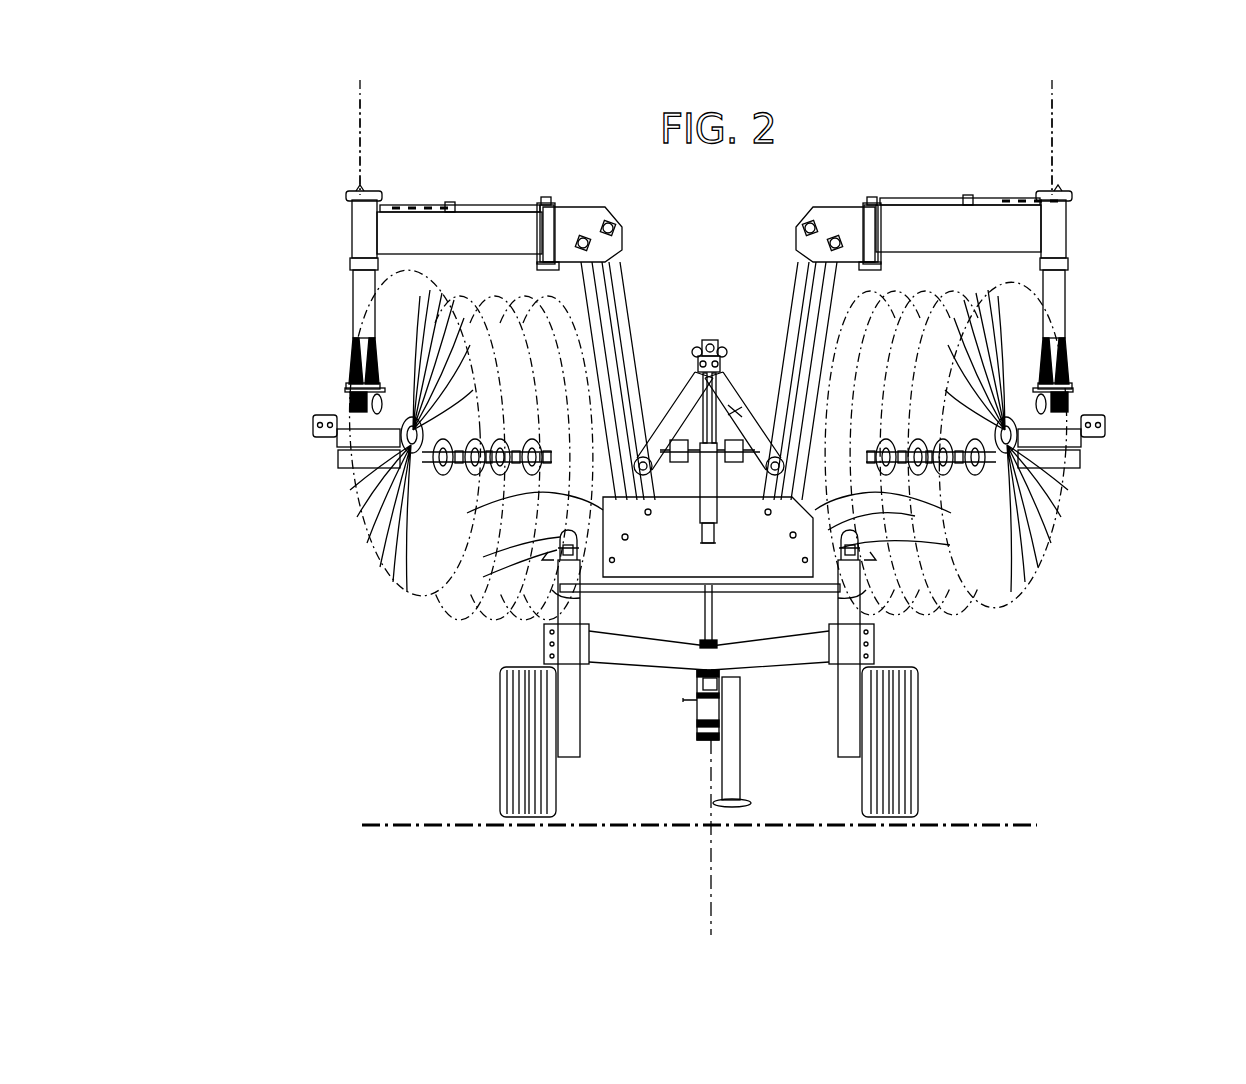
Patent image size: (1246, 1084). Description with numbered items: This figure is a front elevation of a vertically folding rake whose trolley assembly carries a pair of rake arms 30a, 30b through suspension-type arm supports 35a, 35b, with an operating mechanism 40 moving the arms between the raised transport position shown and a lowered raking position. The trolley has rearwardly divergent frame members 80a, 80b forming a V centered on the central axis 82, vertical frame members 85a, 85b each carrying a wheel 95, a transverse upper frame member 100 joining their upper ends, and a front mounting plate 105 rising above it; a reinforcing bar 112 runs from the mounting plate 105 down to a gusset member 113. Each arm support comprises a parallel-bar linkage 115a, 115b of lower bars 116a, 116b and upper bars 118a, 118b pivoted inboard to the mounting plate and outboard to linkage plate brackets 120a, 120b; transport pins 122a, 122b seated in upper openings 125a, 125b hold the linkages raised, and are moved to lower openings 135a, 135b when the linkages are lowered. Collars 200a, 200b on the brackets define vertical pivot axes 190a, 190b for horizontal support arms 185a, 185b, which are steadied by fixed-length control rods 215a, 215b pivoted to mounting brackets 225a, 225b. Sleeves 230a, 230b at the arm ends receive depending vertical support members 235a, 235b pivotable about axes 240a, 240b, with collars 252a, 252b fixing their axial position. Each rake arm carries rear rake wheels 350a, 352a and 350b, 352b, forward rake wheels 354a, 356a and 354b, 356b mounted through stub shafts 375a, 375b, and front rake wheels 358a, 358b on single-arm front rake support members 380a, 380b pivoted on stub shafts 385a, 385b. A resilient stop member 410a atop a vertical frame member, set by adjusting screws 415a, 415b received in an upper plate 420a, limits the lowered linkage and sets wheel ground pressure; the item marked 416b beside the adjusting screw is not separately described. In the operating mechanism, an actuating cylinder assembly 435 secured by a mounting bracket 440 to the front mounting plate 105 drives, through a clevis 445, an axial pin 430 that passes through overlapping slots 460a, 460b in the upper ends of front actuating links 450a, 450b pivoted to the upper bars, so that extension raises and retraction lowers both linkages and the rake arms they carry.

The rake arm 30a is at (1082, 440).
The rake arm 30b is at (337, 440).
The suspension-type arm support 35a is at (1017, 133).
The suspension-type arm support 35b is at (426, 133).
The operating mechanism 40 is at (727, 432).
The rearwardly divergent trolley frame member 80a is at (787, 655).
The rearwardly divergent trolley frame member 80b is at (618, 665).
The central axis 82 is at (714, 905).
The vertical frame member 85a is at (836, 738).
The vertical frame member 85b is at (582, 745).
The wheel 95 is at (558, 800).
The transverse upper frame member 100 is at (750, 590).
The front mounting plate 105 is at (622, 590).
The reinforcing bar 112 is at (702, 603).
The gusset member 113 is at (753, 655).
The linkage 115a is at (848, 320).
The linkage 115b is at (575, 321).
The lower bar 116a is at (792, 240).
The lower bar 116b is at (614, 268).
The upper bar 118a is at (786, 284).
The upper bar 118b is at (630, 290).
The linkage plate bracket 120a is at (848, 203).
The linkage plate bracket 120b is at (597, 206).
The transport pin 122a is at (830, 527).
The transport pin 122b is at (560, 532).
The upper opening 125a is at (811, 500).
The upper opening 125b is at (467, 513).
The lower opening 135a is at (930, 590).
The lower opening 135b is at (482, 492).
The horizontal support arm 185a is at (912, 205).
The horizontal support arm 185b is at (517, 207).
The vertical pivot axis 190a is at (872, 187).
The vertical pivot axis 190b is at (547, 190).
The collar 200a is at (890, 227).
The collar 200b is at (540, 234).
The control rod 215a is at (868, 277).
The control rod 215b is at (550, 275).
The mounting bracket 225a is at (716, 508).
The mounting bracket 225b is at (700, 482).
The vertical sleeve 230a is at (1066, 225).
The vertical sleeve 230b is at (352, 230).
The vertical support member 235a is at (1065, 292).
The vertical support member 235b is at (352, 300).
The vertical pivot axis 240a is at (1055, 128).
The vertical pivot axis 240b is at (359, 112).
The collar 252a is at (1068, 262).
The collar 252b is at (349, 264).
The rear rake wheel 350a is at (1013, 727).
The rear rake wheel 350b is at (520, 627).
The rear rake wheel 352a is at (953, 690).
The rear rake wheel 352b is at (470, 637).
The forward rake wheel 354a is at (953, 663).
The forward rake wheel 354b is at (457, 640).
The forward rake wheel 356a is at (947, 613).
The forward rake wheel 356b is at (417, 613).
The front rake wheel 358a is at (1025, 585).
The front rake wheel 358b is at (393, 600).
The stub shaft 375a is at (1065, 465).
The stub shaft 375b is at (410, 560).
The front rake support member 380a is at (1080, 462).
The front rake support member 380b is at (345, 450).
The stub shaft 385a is at (1075, 400).
The stub shaft 385b is at (348, 386).
The resilient stop member 410a is at (900, 523).
The adjusting screw 415a is at (948, 538).
The adjusting screw 415b is at (492, 576).
The link bar 416b is at (483, 557).
The upper plate 420a is at (552, 598).
The axial pin 430 is at (716, 338).
The actuating cylinder assembly 435 is at (696, 512).
The mounting bracket 440 is at (720, 520).
The clevis 445 is at (700, 366).
The front actuating link 450a is at (732, 380).
The front actuating link 450b is at (688, 383).
The slot 460a is at (726, 352).
The slot 460b is at (697, 346).